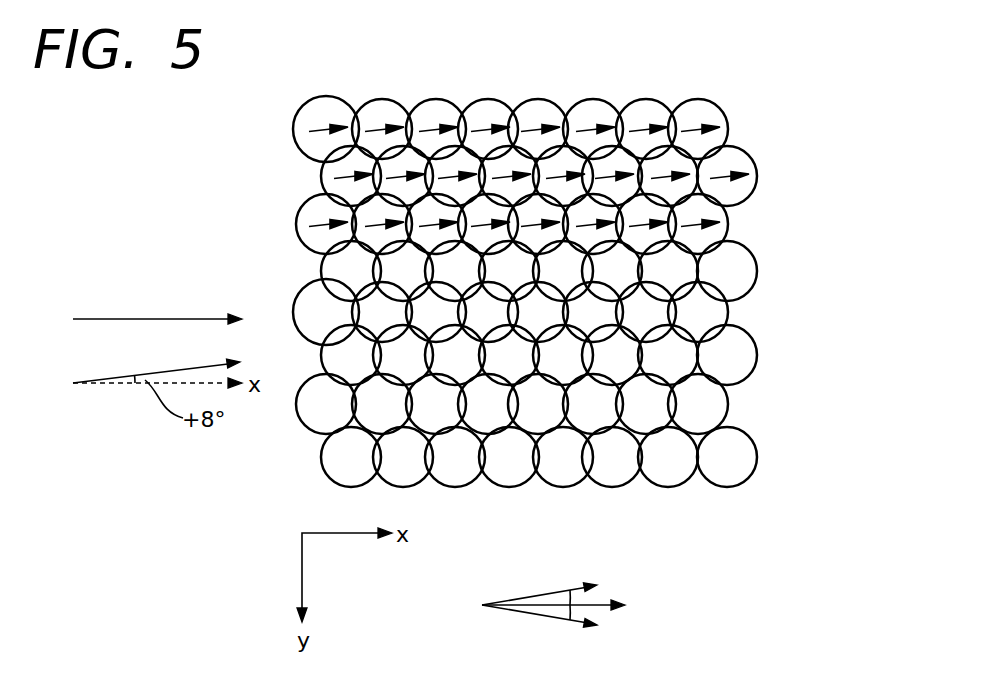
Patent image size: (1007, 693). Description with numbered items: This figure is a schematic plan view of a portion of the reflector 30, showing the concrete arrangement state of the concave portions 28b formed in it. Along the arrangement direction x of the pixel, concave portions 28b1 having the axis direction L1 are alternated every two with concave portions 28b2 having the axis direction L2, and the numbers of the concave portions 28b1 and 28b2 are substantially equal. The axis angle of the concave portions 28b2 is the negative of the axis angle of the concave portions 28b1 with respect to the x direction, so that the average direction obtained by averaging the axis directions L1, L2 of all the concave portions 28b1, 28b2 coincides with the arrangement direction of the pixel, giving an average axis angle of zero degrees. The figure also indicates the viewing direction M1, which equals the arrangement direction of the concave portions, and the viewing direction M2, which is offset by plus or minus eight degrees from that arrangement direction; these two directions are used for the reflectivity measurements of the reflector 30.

The reflector 30 is at (787, 157).
The concave portion 28b is at (298, 218).
The concave portion 28b1 is at (688, 97).
The concave portion 28b2 is at (582, 97).
The axis direction L1 is at (704, 77).
The axis direction L2 is at (605, 75).
The viewing direction M1 is at (174, 319).
The viewing direction M2 is at (174, 366).